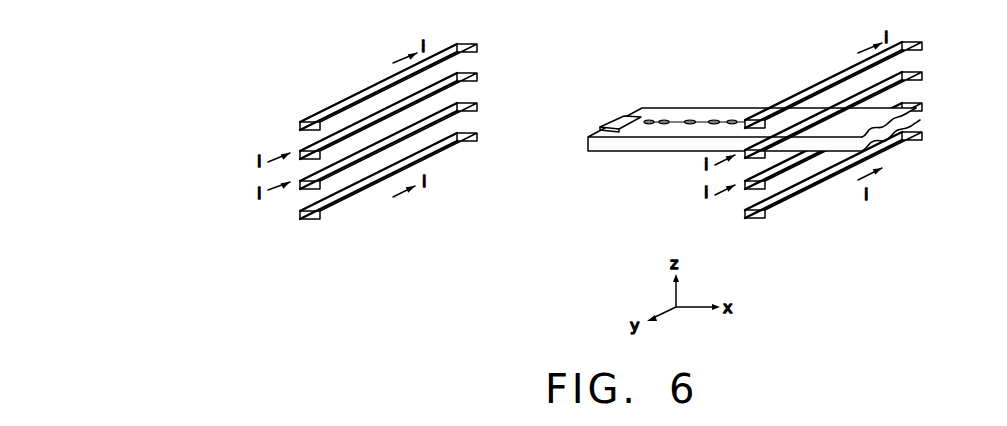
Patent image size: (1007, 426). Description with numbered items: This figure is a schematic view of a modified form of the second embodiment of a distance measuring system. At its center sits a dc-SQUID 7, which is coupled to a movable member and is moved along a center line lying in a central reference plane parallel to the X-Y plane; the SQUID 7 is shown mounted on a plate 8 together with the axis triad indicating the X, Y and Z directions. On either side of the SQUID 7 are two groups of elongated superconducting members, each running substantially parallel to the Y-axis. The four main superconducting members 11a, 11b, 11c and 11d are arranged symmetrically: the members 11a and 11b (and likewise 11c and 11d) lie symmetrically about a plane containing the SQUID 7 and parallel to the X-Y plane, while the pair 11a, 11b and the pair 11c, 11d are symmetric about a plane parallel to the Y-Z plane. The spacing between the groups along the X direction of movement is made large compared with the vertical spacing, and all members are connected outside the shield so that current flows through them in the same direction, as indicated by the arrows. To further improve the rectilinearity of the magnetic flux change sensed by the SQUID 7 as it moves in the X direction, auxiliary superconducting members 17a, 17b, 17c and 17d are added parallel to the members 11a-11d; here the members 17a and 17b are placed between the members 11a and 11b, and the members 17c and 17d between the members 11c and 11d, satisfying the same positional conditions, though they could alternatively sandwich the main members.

The dc-SQUID 7 is at (620, 116).
The substrate plate 8 is at (637, 151).
The superconducting member 11a is at (478, 48).
The superconducting member 11b is at (478, 137).
The superconducting member 11c is at (923, 46).
The superconducting member 11d is at (923, 136).
The auxiliary superconducting member 17a is at (478, 77).
The auxiliary superconducting member 17b is at (478, 107).
The auxiliary superconducting member 17c is at (923, 76).
The auxiliary superconducting member 17d is at (923, 107).